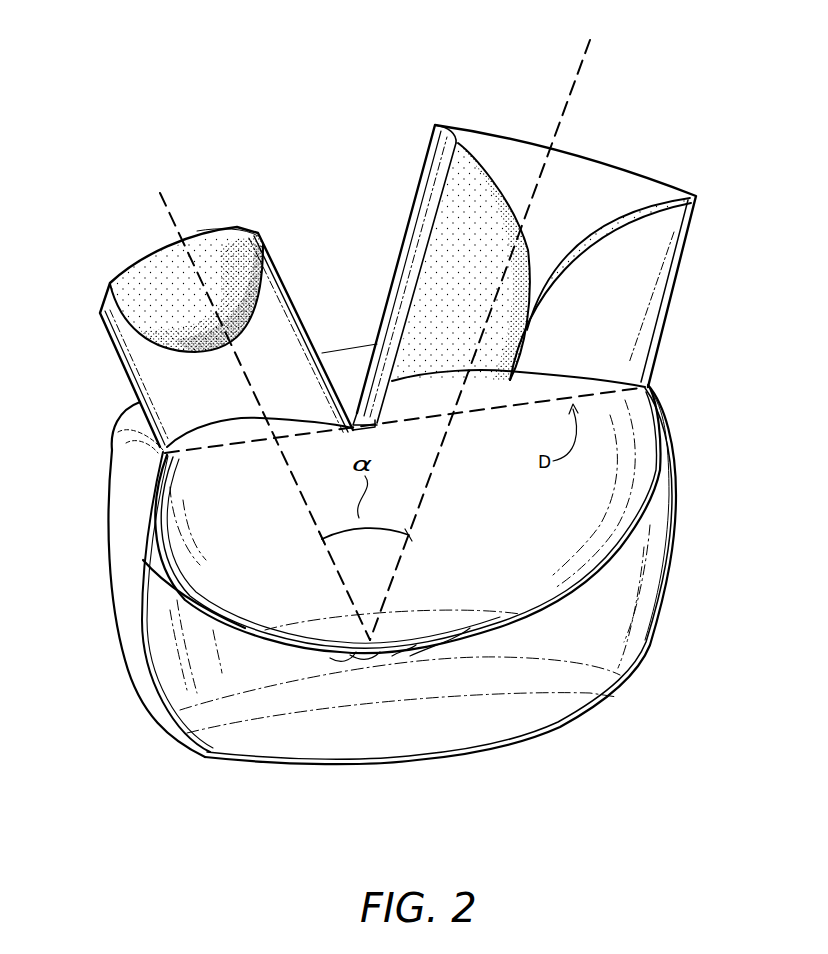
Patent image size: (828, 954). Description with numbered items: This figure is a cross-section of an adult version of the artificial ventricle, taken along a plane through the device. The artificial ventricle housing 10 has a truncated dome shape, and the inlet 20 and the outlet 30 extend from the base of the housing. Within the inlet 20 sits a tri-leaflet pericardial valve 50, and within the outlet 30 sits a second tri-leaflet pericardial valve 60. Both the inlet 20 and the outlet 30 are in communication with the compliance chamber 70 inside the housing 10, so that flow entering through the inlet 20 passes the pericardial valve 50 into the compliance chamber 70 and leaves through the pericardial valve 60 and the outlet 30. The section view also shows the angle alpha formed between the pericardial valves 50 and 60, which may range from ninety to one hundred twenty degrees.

The artificial ventricle housing 10 is at (143, 604).
The inlet 20 is at (692, 257).
The outlet 30 is at (287, 292).
The tri-leaflet pericardial valve 50 is at (580, 240).
The tri-leaflet pericardial valve 60 is at (174, 258).
The compliance chamber 70 is at (533, 613).